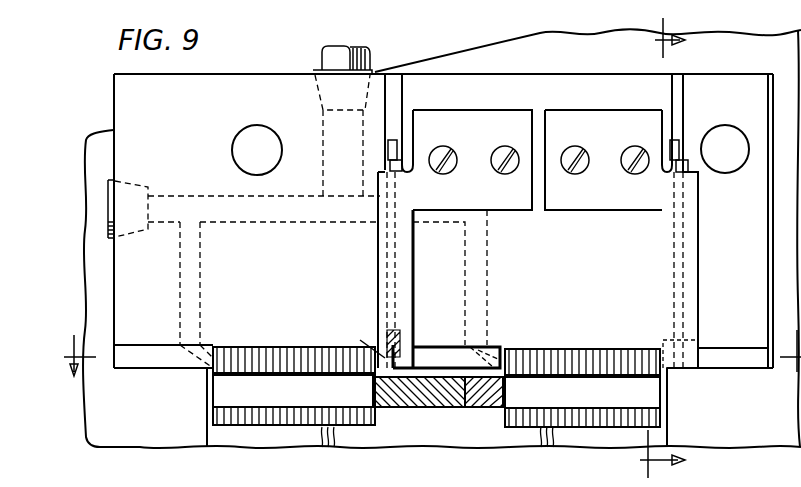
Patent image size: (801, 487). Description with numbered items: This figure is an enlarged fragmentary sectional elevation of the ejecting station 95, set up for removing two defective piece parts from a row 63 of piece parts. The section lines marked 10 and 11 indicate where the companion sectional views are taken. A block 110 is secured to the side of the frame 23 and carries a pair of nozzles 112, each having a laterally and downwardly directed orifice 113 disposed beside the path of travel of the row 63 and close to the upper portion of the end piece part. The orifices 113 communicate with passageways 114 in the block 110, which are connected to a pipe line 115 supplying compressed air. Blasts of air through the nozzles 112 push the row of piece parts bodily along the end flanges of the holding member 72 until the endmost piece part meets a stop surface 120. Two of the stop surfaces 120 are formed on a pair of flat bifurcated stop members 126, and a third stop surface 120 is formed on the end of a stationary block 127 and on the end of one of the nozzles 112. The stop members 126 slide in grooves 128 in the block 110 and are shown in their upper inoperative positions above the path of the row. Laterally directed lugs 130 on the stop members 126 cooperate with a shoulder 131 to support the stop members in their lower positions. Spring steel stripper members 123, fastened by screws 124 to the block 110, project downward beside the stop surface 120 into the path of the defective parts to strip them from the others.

The section line 10- 10 is at (417, 353).
The section line 11- 11 is at (650, 250).
The frame 23 is at (100, 268).
The row of piece parts 63 is at (275, 345).
The holding member 72 is at (425, 385).
The ejecting station 95 is at (158, 443).
The block 110 is at (140, 108).
The nozzle 112 is at (470, 390).
The orifice 113 is at (478, 352).
The passageway 114 is at (240, 240).
The pipe line 115 is at (333, 60).
The stop surface 120 is at (385, 352).
The stripper member 123 is at (389, 297).
The screw 124 is at (493, 152).
The bifurcated stop member 126 is at (390, 347).
The stationary block 127 is at (740, 360).
The groove 128 is at (400, 93).
The lug 130 is at (388, 148).
The shoulder 131 is at (395, 166).